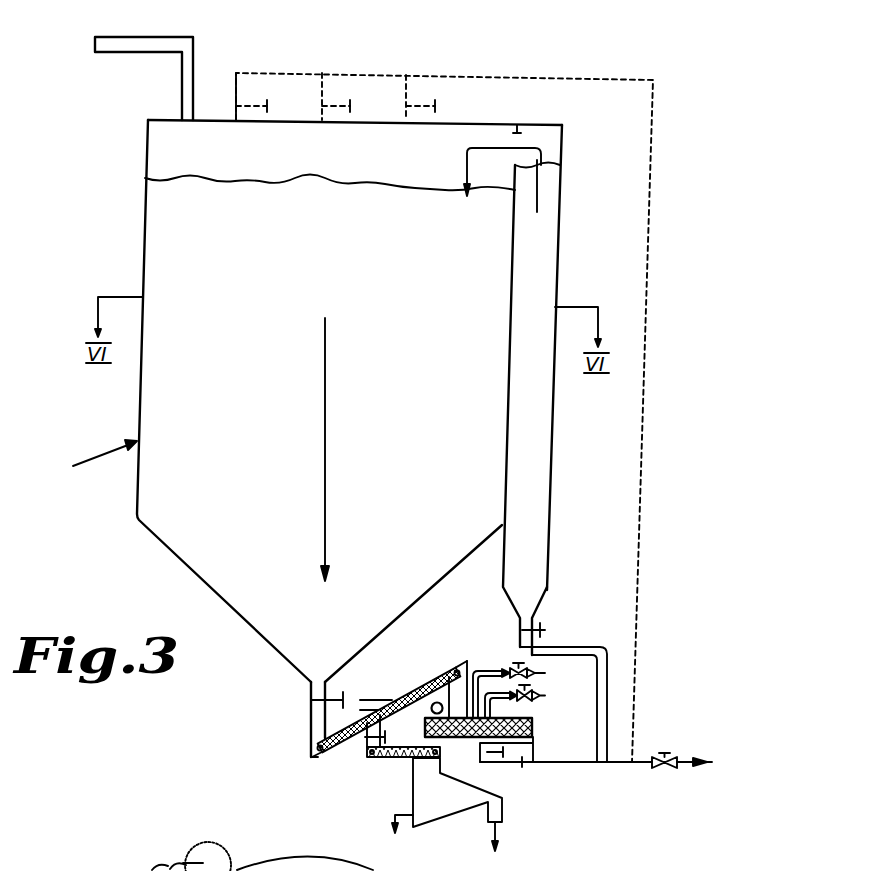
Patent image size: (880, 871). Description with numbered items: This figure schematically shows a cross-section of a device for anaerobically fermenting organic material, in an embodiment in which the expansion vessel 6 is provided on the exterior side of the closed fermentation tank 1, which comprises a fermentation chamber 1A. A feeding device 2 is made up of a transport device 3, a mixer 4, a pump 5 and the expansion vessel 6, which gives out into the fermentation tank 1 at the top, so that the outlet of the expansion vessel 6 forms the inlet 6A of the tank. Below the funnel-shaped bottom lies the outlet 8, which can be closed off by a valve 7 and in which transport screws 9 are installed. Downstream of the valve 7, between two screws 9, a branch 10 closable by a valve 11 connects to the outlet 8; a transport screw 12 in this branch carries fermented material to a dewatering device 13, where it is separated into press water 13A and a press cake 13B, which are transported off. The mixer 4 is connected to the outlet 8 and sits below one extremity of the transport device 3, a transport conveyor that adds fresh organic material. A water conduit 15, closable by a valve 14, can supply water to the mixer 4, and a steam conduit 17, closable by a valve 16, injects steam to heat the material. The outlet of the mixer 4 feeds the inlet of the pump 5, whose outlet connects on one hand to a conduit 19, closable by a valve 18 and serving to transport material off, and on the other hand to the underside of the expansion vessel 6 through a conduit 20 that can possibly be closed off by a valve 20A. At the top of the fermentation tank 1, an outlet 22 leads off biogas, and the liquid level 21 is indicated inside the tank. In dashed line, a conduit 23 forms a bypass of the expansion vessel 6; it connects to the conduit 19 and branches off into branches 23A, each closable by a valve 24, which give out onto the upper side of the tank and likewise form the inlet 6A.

The fermentation tank 1 is at (90, 462).
The fermentation chamber 1A is at (187, 378).
The feeding device 2 is at (554, 744).
The transport device 3 is at (443, 672).
The mixer 4 is at (467, 737).
The pump 5 is at (523, 763).
The expansion vessel 6 is at (535, 495).
The inlet 6A is at (523, 155).
The valve 7 is at (330, 697).
The outlet 8 is at (294, 687).
The transport screws 9 is at (312, 720).
The branch 10 is at (362, 757).
The valve 11 is at (365, 742).
The transport screw 12 is at (397, 758).
The dewatering device 13 is at (437, 807).
The press water 13A is at (390, 822).
The press cake 13B is at (498, 833).
The valve 14 is at (537, 668).
The water conduit 15 is at (493, 668).
The valve 16 is at (537, 690).
The steam conduit 17 is at (498, 705).
The valve 18 is at (662, 770).
The conduit 19 is at (690, 762).
The conduit 20 is at (605, 727).
The valve 20A is at (538, 624).
The liquid surface 21 is at (196, 178).
The outlet for biogas 22 is at (192, 65).
The conduit 23 is at (642, 460).
The branches 23A is at (322, 95).
The valve 24 is at (345, 103).